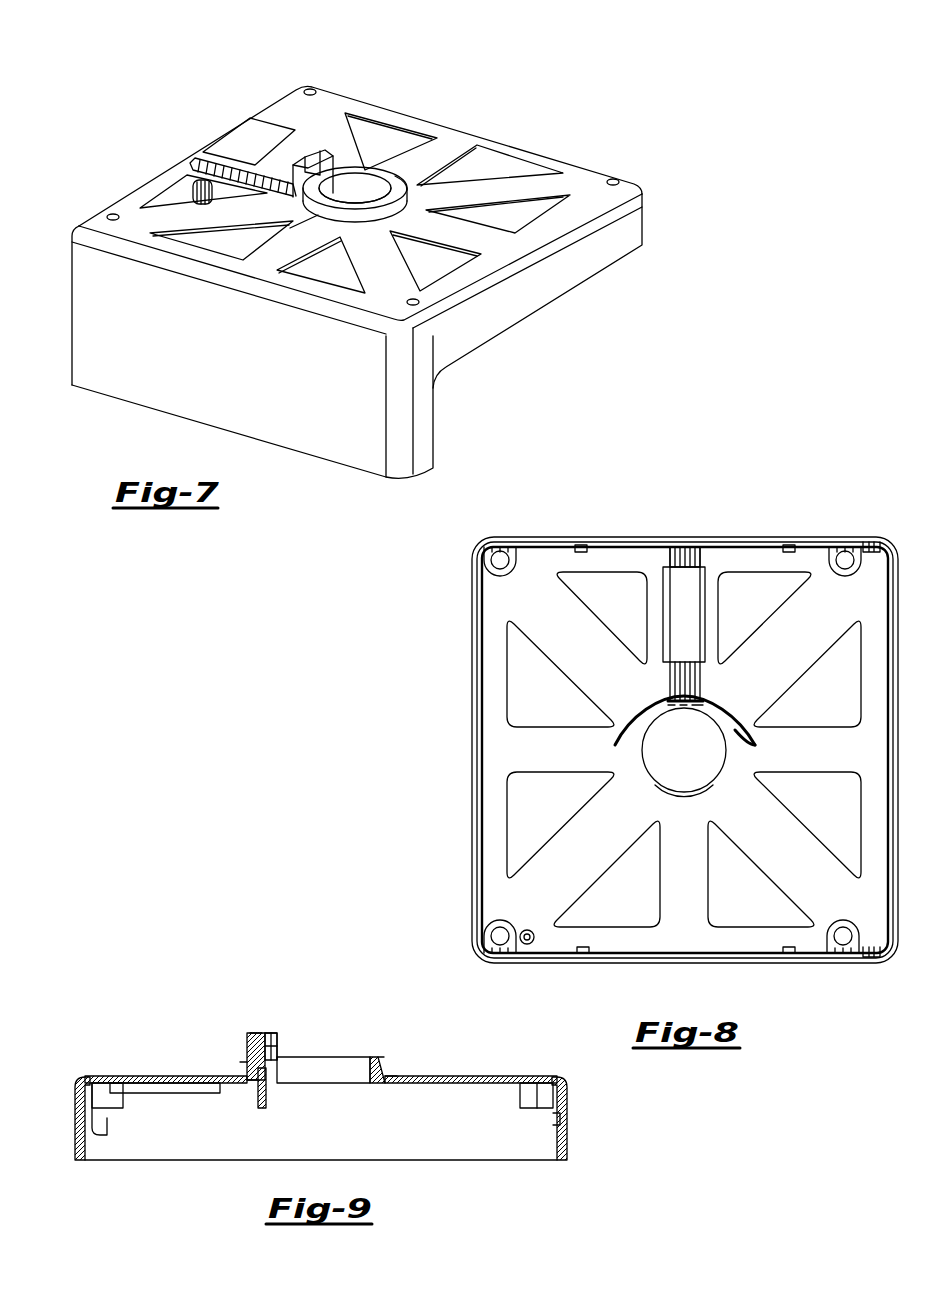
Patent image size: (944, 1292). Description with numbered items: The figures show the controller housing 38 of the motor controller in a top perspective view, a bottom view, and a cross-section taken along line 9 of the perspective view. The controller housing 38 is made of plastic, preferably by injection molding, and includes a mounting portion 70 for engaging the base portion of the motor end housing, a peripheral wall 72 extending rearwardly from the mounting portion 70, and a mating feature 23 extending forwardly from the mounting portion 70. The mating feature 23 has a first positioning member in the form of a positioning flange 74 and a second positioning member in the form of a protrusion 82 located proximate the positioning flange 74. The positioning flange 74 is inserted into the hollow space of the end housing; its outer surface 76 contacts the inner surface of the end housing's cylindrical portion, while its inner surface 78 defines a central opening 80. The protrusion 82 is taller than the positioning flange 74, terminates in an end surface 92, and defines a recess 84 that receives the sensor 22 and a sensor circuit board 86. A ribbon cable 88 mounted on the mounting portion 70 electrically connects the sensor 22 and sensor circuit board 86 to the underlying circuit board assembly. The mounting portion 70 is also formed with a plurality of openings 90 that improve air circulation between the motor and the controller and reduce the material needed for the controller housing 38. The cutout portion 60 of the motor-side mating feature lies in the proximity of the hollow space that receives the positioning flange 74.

In FIG. 7, the controller housing 38 is at (188, 118).
In FIG. 8, the controller housing 38 is at (606, 522).
In FIG. 9, the controller housing 38 is at (162, 975).
In FIG. 7, the mounting portion 70 is at (326, 97).
In FIG. 9, the mounting portion 70 is at (500, 1076).
In FIG. 7, the peripheral wall 72 is at (337, 463).
In FIG. 8, the peripheral wall 72 is at (679, 535).
In FIG. 9, the peripheral wall 72 is at (80, 1162).
In FIG. 7, the openings 90 is at (170, 200).
In FIG. 8, the openings 90 is at (624, 618).
In FIG. 7, the end surface 92 is at (262, 146).
In FIG. 9, the end surface 92 is at (253, 1033).
In FIG. 7, the protrusion 82 is at (318, 147).
In FIG. 8, the protrusion 82 is at (660, 697).
In FIG. 9, the protrusion 82 is at (242, 1040).
In FIG. 7, the central opening 80 is at (372, 192).
In FIG. 8, the central opening 80 is at (693, 761).
In FIG. 9, the central opening 80 is at (342, 1070).
In FIG. 7, the inner surface 78 is at (355, 178).
In FIG. 8, the inner surface 78 is at (673, 786).
In FIG. 9, the inner surface 78 is at (371, 1057).
In FIG. 7, the outer surface 76 is at (363, 212).
In FIG. 9, the outer surface 76 is at (386, 1070).
In FIG. 7, the positioning flange 74 is at (404, 172).
In FIG. 9, the positioning flange 74 is at (381, 1057).
In FIG. 7, the mating feature 23 is at (308, 228).
In FIG. 9, the mating feature 23 is at (237, 1058).
In FIG. 8, the sensor 22 is at (630, 737).
In FIG. 9, the sensor 22 is at (265, 1033).
In FIG. 8, the recess 84 is at (755, 745).
In FIG. 9, the recess 84 is at (277, 1055).
In FIG. 8, the sensor circuit board 86 is at (700, 700).
In FIG. 9, the sensor circuit board 86 is at (268, 1095).
In FIG. 8, the ribbon cable 88 is at (702, 557).
In FIG. 9, the ribbon cable 88 is at (164, 1083).
In FIG. 9, the cutout portion 60 is at (254, 1082).
In FIG. 7, the section line 9- 9 is at (140, 117).